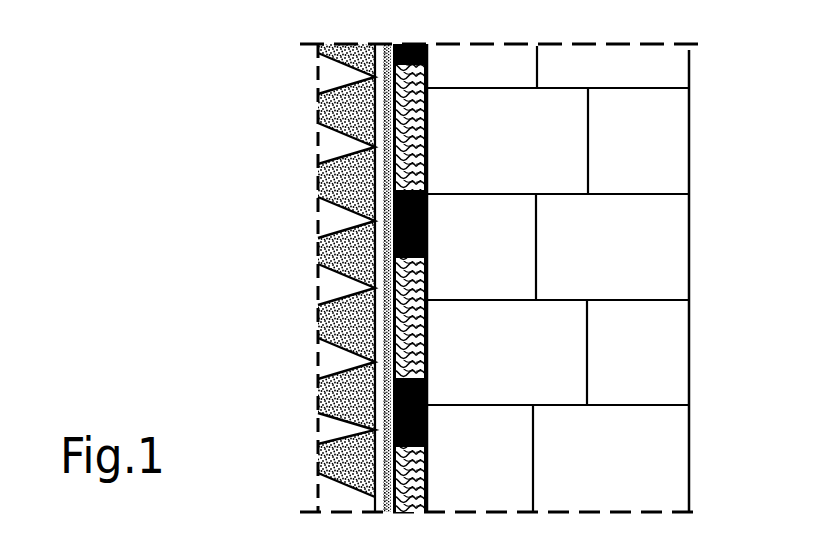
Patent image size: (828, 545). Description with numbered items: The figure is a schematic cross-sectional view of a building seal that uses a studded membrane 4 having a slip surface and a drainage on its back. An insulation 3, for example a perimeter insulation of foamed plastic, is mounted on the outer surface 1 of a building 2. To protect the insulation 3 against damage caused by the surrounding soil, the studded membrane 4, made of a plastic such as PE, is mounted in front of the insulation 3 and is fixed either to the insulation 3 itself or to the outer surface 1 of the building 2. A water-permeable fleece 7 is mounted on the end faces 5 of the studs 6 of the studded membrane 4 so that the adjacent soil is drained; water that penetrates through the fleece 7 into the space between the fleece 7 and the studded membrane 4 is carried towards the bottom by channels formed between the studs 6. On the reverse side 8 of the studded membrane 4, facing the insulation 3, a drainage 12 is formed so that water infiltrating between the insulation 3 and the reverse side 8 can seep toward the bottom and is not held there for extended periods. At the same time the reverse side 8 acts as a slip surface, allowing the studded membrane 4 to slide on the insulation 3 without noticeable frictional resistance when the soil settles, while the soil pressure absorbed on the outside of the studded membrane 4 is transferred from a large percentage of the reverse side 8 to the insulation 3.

The outer surface 1 is at (428, 165).
The building 2 is at (644, 154).
The insulation 3 is at (428, 254).
The studded membrane 4 is at (312, 382).
The end faces 5 is at (320, 107).
The studs 6 is at (320, 188).
The water-permeable fleece 7 is at (318, 282).
The reverse side 8 is at (428, 102).
The drainage 12 is at (386, 351).